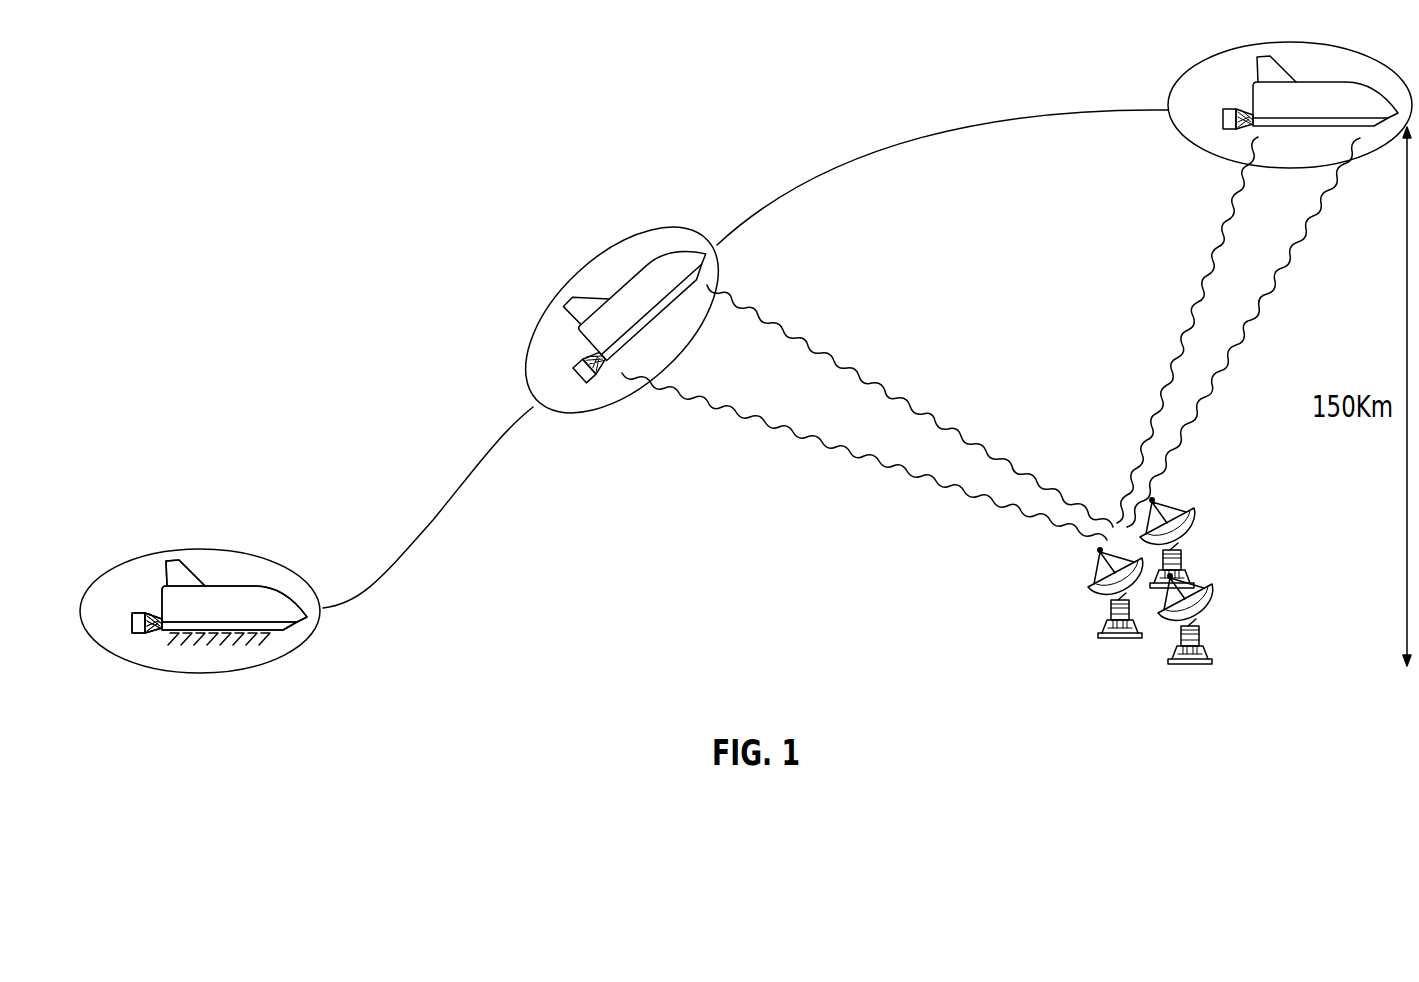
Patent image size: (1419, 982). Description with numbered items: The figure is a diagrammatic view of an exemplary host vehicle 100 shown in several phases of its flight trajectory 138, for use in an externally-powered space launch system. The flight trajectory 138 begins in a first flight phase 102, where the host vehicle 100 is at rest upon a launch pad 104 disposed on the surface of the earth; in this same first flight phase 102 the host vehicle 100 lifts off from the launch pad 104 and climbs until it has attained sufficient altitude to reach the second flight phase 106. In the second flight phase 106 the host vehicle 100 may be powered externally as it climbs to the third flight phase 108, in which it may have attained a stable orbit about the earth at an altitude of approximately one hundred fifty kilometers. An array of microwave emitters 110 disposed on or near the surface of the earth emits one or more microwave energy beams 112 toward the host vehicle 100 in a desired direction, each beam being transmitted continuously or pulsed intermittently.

The host vehicle 100 is at (307, 617).
The first flight phase 102 is at (232, 619).
The launch pad 104 is at (225, 637).
The second flight phase 106 is at (632, 262).
The third flight phase 108 is at (1205, 82).
The array of microwave emitters 110 is at (1098, 594).
The microwave energy beam 112 is at (777, 412).
The flight trajectory 138 is at (535, 228).